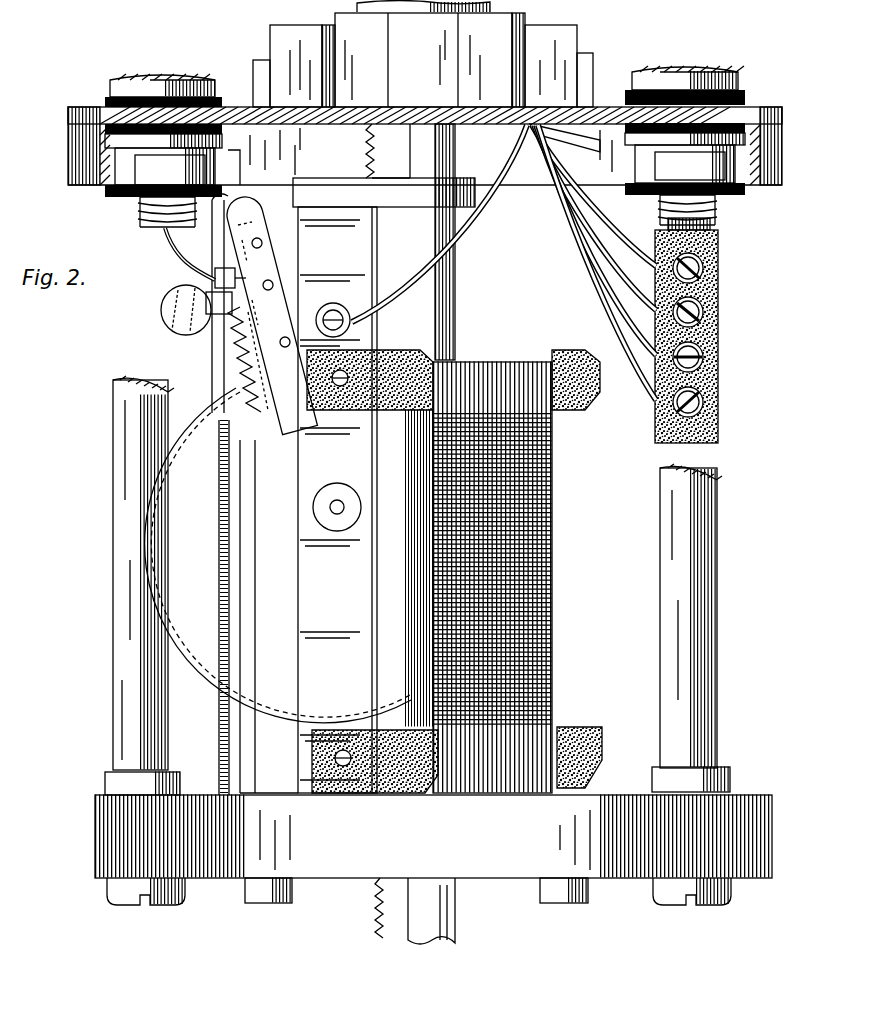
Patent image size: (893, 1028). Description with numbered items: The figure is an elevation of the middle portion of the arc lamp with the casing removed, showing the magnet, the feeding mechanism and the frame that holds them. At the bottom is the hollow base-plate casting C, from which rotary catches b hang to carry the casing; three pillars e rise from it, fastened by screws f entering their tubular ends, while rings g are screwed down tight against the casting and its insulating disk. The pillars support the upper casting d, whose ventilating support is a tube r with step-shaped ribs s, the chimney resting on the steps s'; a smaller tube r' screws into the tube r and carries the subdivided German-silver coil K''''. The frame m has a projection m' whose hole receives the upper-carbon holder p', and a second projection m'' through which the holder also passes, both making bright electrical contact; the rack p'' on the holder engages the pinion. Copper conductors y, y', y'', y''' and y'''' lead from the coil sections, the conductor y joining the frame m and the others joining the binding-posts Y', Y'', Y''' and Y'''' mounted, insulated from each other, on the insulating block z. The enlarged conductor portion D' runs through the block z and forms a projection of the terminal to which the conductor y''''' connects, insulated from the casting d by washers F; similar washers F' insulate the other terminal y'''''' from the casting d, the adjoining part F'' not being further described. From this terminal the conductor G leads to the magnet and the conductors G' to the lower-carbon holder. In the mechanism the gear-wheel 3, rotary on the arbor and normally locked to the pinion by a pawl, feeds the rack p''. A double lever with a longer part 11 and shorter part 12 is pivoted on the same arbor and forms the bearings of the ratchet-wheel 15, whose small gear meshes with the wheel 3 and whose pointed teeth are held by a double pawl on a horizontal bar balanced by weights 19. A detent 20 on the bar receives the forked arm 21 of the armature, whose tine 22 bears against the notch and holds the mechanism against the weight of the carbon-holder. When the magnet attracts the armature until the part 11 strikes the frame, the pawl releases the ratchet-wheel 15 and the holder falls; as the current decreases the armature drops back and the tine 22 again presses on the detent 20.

The washers F is at (435, 145).
The washers F' is at (147, 150).
The bushing flange F'' is at (245, 156).
The upper casting d is at (782, 174).
The lamp terminal y'''''' is at (176, 62).
The copper conductor y''''' is at (698, 52).
The smaller tube r' is at (393, 11).
The tube r is at (423, 60).
The ribs s is at (407, 60).
The step s' is at (417, 66).
The projection of frame m' is at (446, 294).
The frame m is at (337, 500).
The projection of frame m'' is at (457, 760).
The upper-carbon holder p' is at (431, 534).
The rack p'' is at (374, 531).
The German-silver coil K'''' is at (515, 577).
The pillars e is at (417, 573).
The rings g is at (180, 780).
The base-plate casting C is at (433, 836).
The screws f is at (165, 900).
The rotary catches b is at (268, 900).
The insulating block z is at (718, 442).
The binding-post Y' is at (712, 268).
The binding-post Y'' is at (716, 312).
The binding-post Y''' is at (717, 357).
The binding-post Y'''' is at (722, 402).
The enlarged portion of conductor D' is at (711, 223).
The copper conductor y is at (476, 223).
The copper conductors y' is at (594, 195).
The copper conductor y'' is at (595, 217).
The copper conductor y''' is at (596, 240).
The copper conductor y'''' is at (597, 267).
The longer part of double lever 11 is at (248, 216).
The shorter part of double lever 12 is at (271, 292).
The ratchet-wheel 15 is at (248, 359).
The arm 21 is at (222, 366).
The conductor G is at (183, 254).
The tine 22 is at (214, 272).
The weights 19 is at (176, 326).
The detent 20 is at (212, 318).
The gear-wheel 3 is at (278, 590).
The conductors G' is at (209, 607).